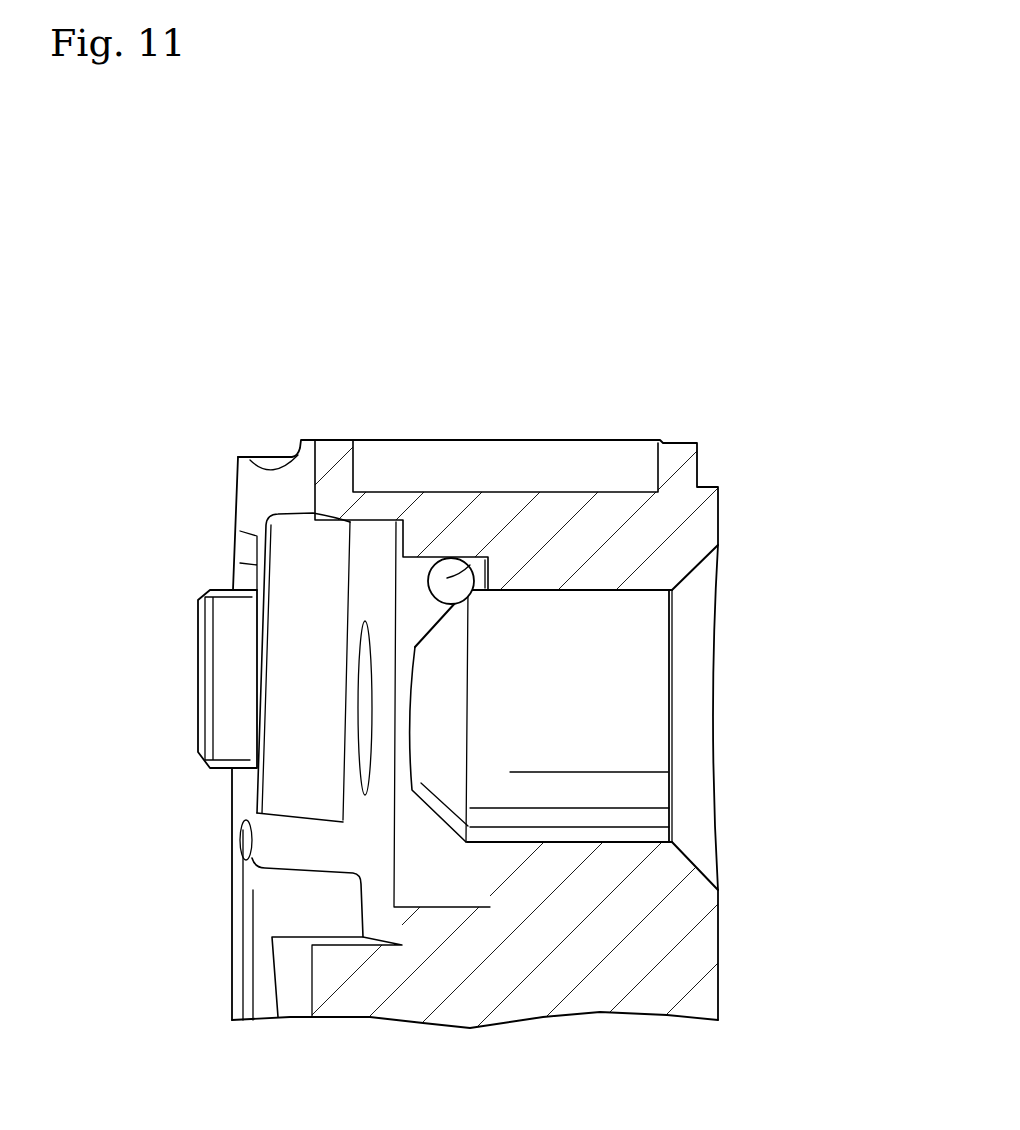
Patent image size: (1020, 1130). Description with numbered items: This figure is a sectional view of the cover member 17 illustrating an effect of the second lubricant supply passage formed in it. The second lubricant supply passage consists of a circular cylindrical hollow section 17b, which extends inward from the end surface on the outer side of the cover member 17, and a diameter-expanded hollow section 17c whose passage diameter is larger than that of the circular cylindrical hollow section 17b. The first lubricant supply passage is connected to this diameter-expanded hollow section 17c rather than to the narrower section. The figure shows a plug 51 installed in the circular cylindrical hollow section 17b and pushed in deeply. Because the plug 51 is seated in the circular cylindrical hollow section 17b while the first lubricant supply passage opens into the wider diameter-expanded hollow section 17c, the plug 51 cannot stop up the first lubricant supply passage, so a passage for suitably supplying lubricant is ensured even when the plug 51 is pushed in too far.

The cover member 17 is at (633, 417).
The circular cylindrical hollow section 17b is at (613, 592).
The diameter-expanded hollow section 17c is at (433, 875).
The plug 51 is at (617, 680).